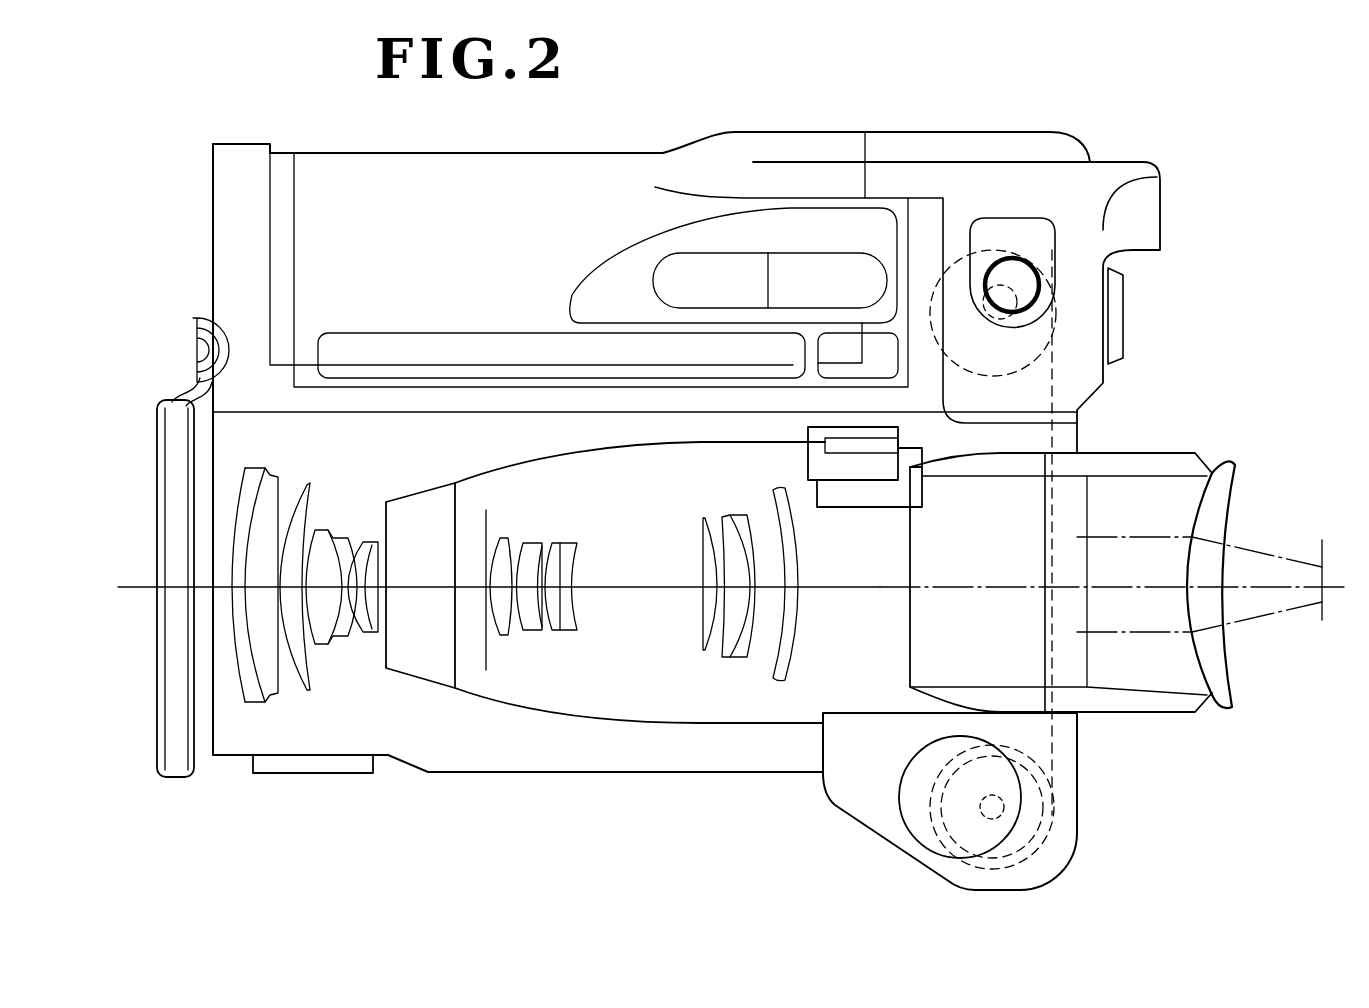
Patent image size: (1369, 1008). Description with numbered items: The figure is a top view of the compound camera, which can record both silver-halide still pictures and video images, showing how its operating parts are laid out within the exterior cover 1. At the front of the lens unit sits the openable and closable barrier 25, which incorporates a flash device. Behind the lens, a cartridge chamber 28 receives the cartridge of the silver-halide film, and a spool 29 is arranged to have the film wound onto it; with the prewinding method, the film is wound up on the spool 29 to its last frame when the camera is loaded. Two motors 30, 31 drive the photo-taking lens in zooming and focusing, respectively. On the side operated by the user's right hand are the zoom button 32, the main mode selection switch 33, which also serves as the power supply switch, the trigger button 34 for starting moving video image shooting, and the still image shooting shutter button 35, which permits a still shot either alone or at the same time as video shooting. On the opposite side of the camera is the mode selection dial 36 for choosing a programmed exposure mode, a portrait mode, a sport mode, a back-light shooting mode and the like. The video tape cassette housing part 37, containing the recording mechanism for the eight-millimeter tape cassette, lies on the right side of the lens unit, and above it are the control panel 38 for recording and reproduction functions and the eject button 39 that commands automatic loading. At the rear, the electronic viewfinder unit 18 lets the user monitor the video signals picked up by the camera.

The exterior cover 1 is at (520, 772).
The electronic viewfinder unit 18 is at (1140, 463).
The barrier 25 is at (177, 740).
The cartridge chamber 28 is at (1047, 826).
The spool 29 is at (1057, 317).
The motor 30 is at (843, 440).
The motor 31 is at (922, 490).
The zoom button 32 is at (823, 253).
The main mode selection switch 33 is at (300, 763).
The trigger button 34 is at (1117, 347).
The still image shooting shutter button 35 is at (1025, 255).
The mode selection dial 36 is at (900, 807).
The video tape cassette housing part 37 is at (433, 222).
The control panel 38 is at (360, 345).
The eject button 39 is at (878, 350).